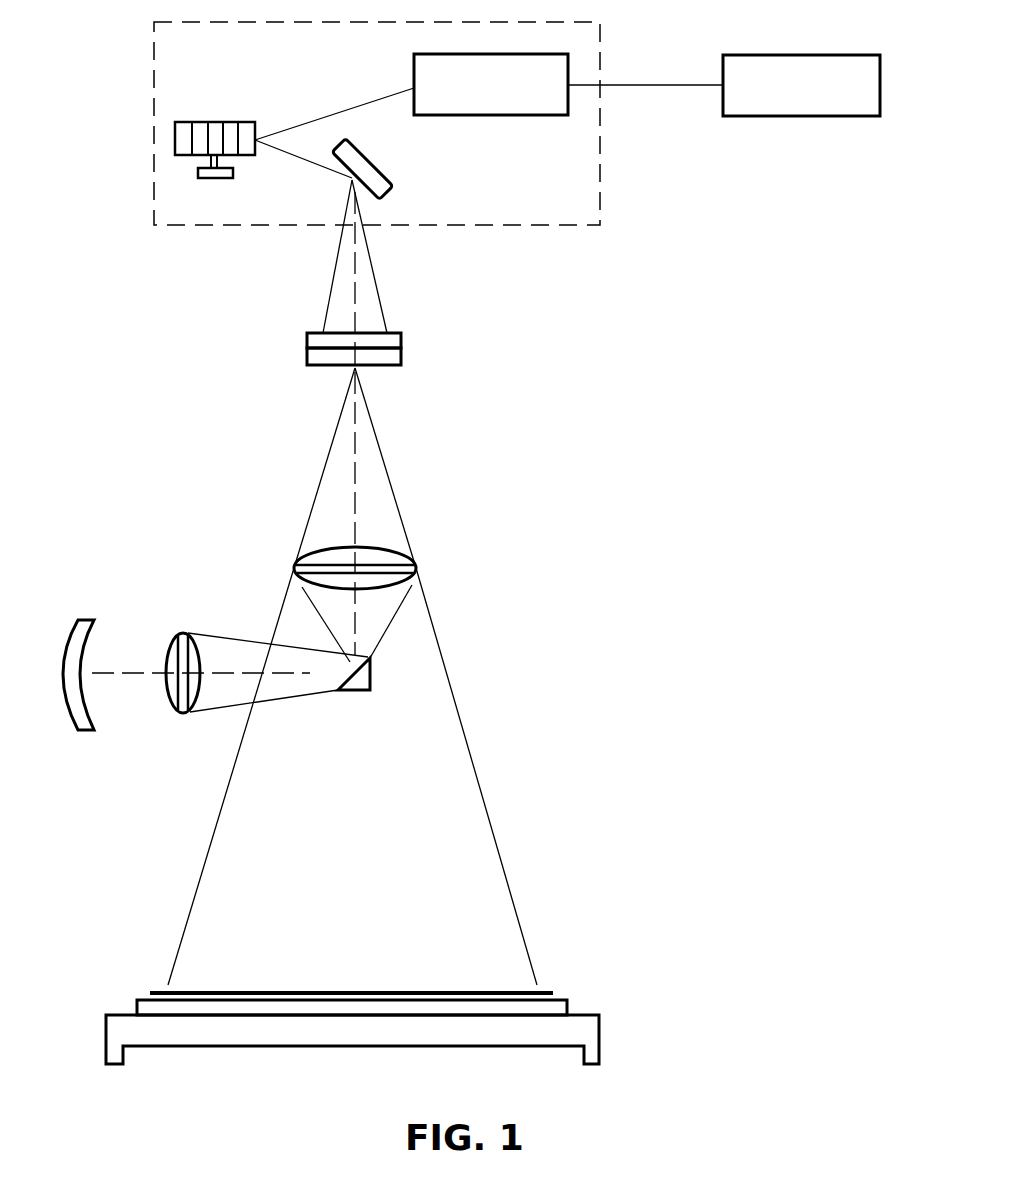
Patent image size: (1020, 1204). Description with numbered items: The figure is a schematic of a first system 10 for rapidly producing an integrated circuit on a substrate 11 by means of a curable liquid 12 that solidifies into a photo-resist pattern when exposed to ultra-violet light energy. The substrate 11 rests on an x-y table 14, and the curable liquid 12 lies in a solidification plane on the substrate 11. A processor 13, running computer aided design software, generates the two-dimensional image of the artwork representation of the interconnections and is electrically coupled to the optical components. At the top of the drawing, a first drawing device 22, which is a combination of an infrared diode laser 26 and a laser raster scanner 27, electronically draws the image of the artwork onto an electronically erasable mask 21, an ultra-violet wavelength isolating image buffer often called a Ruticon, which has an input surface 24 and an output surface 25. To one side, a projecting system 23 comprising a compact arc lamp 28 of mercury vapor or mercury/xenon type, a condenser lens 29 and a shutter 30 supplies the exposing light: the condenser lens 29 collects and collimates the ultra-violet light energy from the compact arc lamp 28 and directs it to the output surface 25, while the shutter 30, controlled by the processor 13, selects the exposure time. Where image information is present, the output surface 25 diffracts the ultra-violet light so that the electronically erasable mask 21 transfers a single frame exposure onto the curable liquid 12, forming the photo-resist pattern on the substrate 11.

The first system 10 is at (668, 508).
The substrate 11 is at (567, 1010).
The curable liquid 12 is at (547, 995).
The processor 13 is at (817, 117).
The x-y table 14 is at (599, 1042).
The electronically erasable mask 21 is at (424, 351).
The first drawing device 22 is at (600, 175).
The projecting system 23 is at (86, 577).
The input surface 24 is at (310, 333).
The output surface 25 is at (316, 367).
The infrared diode laser 26 is at (447, 117).
The laser raster scanner 27 is at (200, 120).
The compact arc lamp 28 is at (72, 728).
The condenser lens 29 is at (185, 630).
The shutter 30 is at (355, 693).